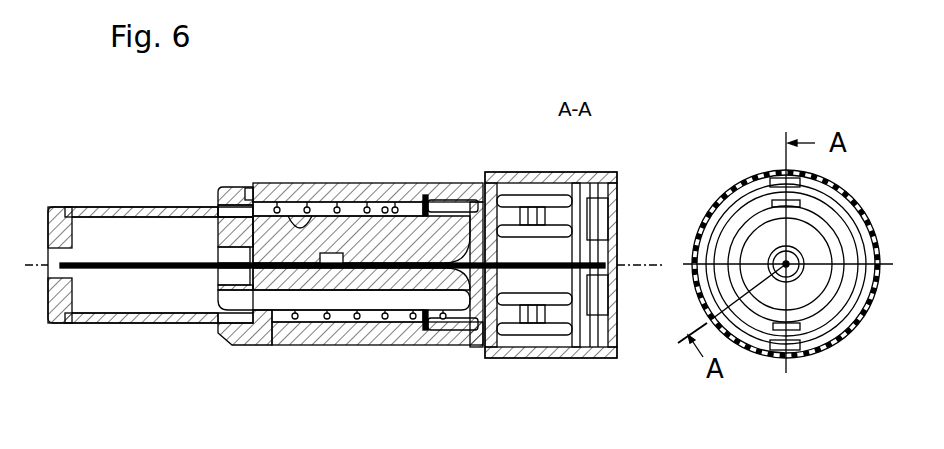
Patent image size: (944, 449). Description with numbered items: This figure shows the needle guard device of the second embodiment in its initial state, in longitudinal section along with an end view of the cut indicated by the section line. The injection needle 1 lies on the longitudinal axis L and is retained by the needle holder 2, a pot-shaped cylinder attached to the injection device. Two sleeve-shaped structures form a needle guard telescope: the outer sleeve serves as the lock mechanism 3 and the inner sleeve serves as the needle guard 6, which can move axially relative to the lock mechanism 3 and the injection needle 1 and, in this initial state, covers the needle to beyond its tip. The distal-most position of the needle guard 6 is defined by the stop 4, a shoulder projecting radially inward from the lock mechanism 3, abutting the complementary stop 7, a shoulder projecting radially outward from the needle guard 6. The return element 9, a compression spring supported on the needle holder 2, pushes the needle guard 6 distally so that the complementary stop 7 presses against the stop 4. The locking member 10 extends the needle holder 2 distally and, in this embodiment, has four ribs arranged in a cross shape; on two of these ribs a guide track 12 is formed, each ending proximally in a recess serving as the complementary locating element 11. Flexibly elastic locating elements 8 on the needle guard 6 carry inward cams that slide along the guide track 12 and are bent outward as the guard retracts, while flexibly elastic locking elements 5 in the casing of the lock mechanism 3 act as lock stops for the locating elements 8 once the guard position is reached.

The injection needle 1 is at (123, 263).
The needle holder 2 is at (480, 345).
The outer sleeve (lock mechanism) 3 is at (410, 340).
The stop 4 is at (230, 338).
The locking element 5 is at (298, 208).
The inner sleeve (needle guard) 6 is at (98, 212).
The complementary stop 7 is at (262, 340).
The locating element 8 is at (237, 222).
The return element 9 is at (382, 318).
The locking member 10 is at (417, 238).
The complementary locating element 11 is at (385, 208).
The guide track 12 is at (298, 230).
The longitudinal axis L is at (632, 262).